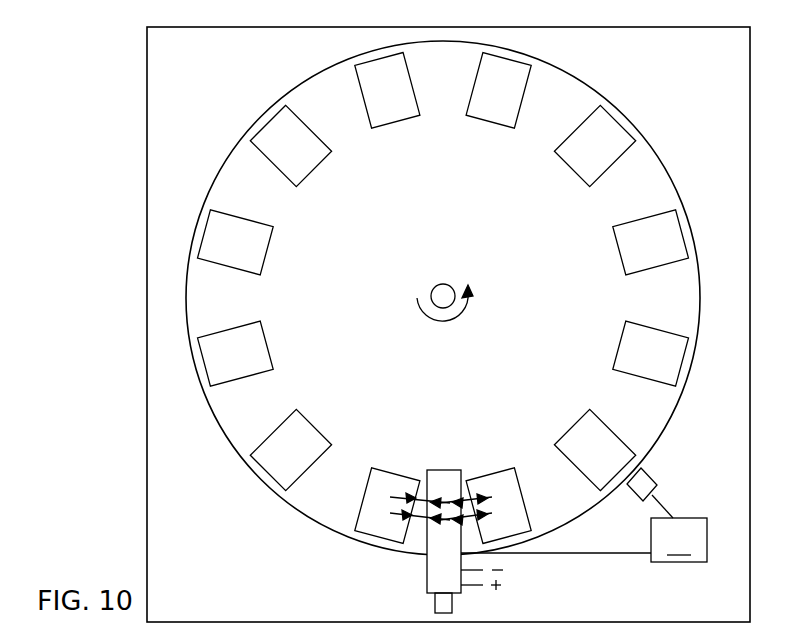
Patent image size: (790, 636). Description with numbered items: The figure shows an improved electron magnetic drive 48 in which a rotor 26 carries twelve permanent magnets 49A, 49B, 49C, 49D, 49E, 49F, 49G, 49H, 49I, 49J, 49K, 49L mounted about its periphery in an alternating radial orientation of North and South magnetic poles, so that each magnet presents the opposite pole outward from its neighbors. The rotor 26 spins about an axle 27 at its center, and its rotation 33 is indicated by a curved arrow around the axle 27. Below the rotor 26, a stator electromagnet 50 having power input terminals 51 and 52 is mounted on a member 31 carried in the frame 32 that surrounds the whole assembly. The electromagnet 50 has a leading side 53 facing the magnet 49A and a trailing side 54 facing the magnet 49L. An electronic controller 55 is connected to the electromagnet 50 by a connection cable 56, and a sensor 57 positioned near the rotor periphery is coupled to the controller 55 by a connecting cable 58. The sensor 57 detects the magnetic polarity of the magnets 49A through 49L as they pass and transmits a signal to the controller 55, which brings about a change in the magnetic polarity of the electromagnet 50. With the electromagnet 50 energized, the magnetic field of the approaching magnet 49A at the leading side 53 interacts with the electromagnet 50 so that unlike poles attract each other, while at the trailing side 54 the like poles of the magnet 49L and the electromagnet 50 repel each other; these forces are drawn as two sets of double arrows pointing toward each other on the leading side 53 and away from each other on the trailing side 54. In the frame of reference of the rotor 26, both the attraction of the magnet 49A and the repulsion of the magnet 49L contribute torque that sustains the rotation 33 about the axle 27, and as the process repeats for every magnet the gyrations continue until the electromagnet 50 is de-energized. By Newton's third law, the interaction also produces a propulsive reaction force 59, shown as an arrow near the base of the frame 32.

The rotor 26 is at (245, 432).
The axle 27 is at (443, 292).
The member 31 is at (435, 605).
The frame 32 is at (708, 605).
The rotation 33 is at (471, 290).
The electron magnetic drive 48 is at (104, 459).
The permanent magnet 49A is at (368, 481).
The permanent magnet 49B is at (300, 420).
The permanent magnet 49C is at (252, 329).
The permanent magnet 49D is at (258, 233).
The permanent magnet 49E is at (295, 138).
The permanent magnet 49F is at (399, 83).
The permanent magnet 49G is at (515, 88).
The permanent magnet 49H is at (603, 159).
The permanent magnet 49I is at (633, 233).
The permanent magnet 49J is at (632, 328).
The permanent magnet 49K is at (590, 412).
The permanent magnet 49L is at (524, 505).
The stator electromagnet 50 is at (450, 580).
The power input terminal 51 is at (464, 589).
The power input terminal 52 is at (478, 566).
The leading side 53 is at (423, 470).
The trailing side 54 is at (462, 470).
The electronic controller 55 is at (679, 540).
The connection cable 56 is at (568, 553).
The sensor 57 is at (656, 478).
The connecting cable 58 is at (668, 506).
The propulsive reaction force 59 is at (318, 593).